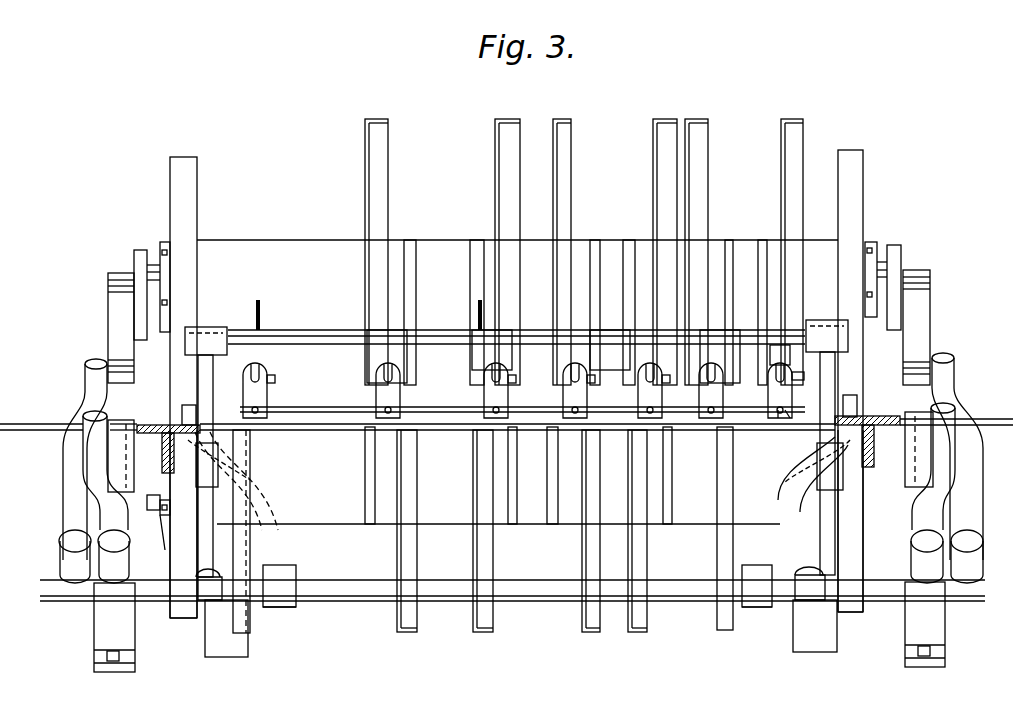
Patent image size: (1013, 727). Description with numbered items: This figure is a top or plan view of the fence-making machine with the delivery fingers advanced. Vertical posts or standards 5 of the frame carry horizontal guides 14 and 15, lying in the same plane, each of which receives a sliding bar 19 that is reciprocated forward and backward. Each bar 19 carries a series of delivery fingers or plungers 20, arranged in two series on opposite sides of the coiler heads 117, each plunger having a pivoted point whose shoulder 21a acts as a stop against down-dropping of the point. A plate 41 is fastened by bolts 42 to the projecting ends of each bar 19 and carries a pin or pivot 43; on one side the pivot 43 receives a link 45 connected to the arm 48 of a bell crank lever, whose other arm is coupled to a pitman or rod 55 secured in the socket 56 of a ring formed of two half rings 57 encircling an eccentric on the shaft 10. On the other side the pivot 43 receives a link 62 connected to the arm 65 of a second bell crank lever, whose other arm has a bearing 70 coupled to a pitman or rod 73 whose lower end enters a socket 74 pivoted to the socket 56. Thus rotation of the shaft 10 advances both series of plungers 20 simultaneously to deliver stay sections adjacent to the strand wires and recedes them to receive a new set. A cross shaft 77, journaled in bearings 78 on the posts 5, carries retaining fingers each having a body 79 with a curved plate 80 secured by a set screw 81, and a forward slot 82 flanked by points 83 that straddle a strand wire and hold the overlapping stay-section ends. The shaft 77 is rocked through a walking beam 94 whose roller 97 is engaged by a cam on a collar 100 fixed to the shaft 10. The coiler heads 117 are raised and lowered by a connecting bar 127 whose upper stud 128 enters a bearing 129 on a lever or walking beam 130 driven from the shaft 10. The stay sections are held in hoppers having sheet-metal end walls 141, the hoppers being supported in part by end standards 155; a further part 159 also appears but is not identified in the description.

The upright post 5 is at (50, 424).
The shaft 10 is at (152, 601).
The guide 14 is at (197, 187).
The guide 15 is at (855, 612).
The sliding bar 19 is at (832, 437).
The delivery finger or plunger 20 is at (470, 270).
The shoulder 21a is at (480, 330).
The plate 41 is at (170, 256).
The bolts 42 is at (159, 544).
The pin or pivot 43 is at (150, 272).
The link 45 is at (141, 250).
The arm of bell crank lever 48 is at (108, 316).
The pitman or rod 55 is at (85, 385).
The socket 56 is at (120, 552).
The half rings 57 is at (94, 626).
The link 62 is at (145, 425).
The arm of bell crank lever 65 is at (118, 443).
The bearing 70 is at (985, 595).
The pitman or rod 73 is at (70, 480).
The socket 74 is at (60, 562).
The cross shaft 77 is at (310, 400).
The journal boxes or bearings 78 is at (188, 405).
The finger body or member 79 is at (268, 392).
The curved plate 80 is at (784, 412).
The set screw 81 is at (780, 414).
The slot or recess 82 is at (780, 370).
The point 83 is at (795, 374).
The walking beam or lever 94 is at (265, 540).
The roller 97 is at (296, 575).
The sleeve or collar 100 is at (285, 608).
The coiler head 117 is at (270, 376).
The connecting bar 127 is at (290, 330).
The stud or pin 128 is at (312, 340).
The bearing 129 is at (220, 327).
The lever or walking beam 130 is at (198, 370).
The hopper end wall 141 is at (553, 119).
The end standards 155 is at (190, 458).
The foot block 159 is at (225, 657).